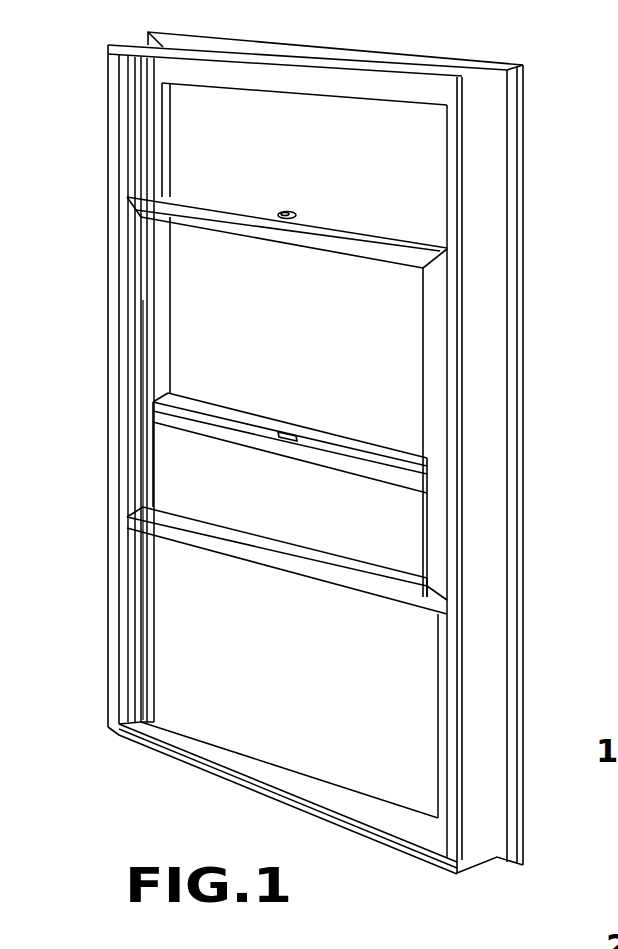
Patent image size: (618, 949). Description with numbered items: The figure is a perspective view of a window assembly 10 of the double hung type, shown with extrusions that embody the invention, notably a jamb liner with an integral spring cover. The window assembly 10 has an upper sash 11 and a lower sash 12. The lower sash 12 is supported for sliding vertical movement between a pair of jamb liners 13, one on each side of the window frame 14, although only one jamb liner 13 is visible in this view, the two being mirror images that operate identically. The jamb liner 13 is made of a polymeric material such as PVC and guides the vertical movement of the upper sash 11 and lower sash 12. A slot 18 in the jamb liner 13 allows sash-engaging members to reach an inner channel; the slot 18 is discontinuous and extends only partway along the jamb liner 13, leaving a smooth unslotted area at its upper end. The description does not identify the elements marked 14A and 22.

The window assembly 10 is at (314, 443).
The upper sash 11 is at (322, 83).
The lower sash 12 is at (318, 580).
The jamb liner 13 is at (78, 664).
The window frame 14 is at (108, 707).
The sill front edge 14A is at (227, 772).
The slot 18 is at (143, 560).
The bottom corner joint 22 is at (141, 723).